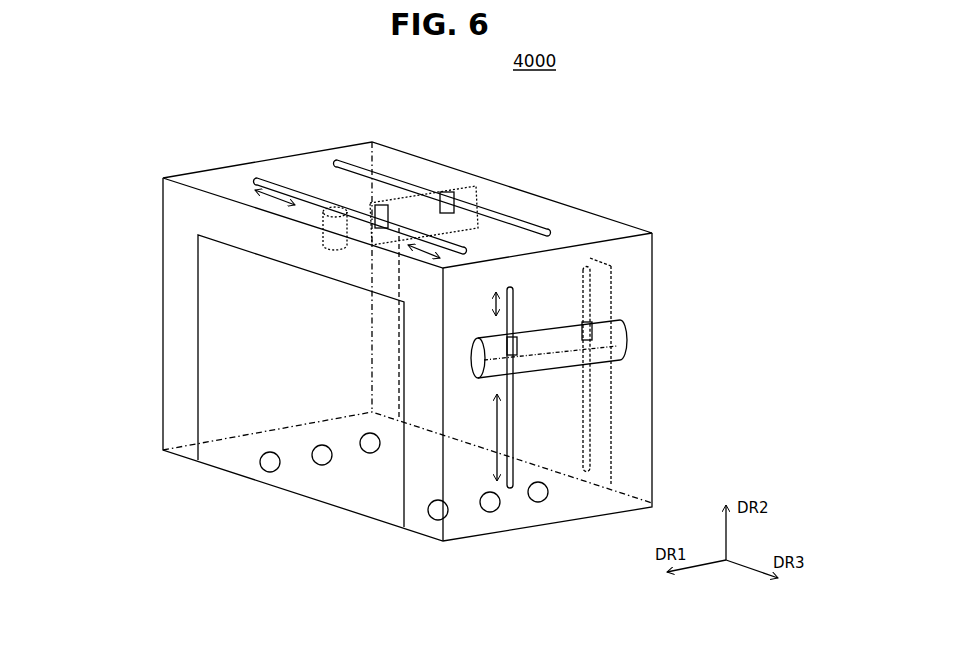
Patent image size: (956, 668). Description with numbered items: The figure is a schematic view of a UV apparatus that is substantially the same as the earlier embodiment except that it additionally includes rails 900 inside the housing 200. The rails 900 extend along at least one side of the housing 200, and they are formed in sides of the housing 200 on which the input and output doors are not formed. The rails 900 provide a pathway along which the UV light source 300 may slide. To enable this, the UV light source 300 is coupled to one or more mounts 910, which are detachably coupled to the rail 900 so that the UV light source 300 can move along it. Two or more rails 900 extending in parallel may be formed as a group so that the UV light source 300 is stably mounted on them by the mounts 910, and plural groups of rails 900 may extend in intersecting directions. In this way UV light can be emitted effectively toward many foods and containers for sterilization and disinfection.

The housing 200 is at (158, 222).
The UV light source 300 is at (623, 330).
The rails 900 is at (323, 153).
The mount 910 is at (462, 203).